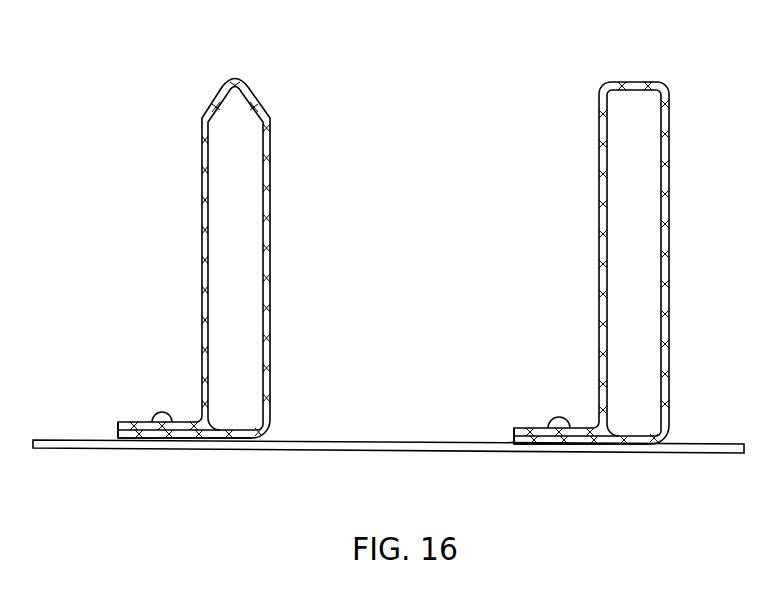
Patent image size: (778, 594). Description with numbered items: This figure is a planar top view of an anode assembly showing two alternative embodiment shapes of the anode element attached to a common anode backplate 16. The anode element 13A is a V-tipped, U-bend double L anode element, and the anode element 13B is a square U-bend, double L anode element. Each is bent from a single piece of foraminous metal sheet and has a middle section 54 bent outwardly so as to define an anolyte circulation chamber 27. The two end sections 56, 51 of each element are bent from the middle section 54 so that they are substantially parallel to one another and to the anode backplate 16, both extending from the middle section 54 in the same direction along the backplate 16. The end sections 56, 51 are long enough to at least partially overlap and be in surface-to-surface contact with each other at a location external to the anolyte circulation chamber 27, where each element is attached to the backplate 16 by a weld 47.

The V-tipped, U-bend double L anode element 13A is at (198, 264).
The square U-bend, double L anode element 13B is at (632, 282).
The anode backplate 16 is at (372, 451).
The anolyte circulation chamber 27 is at (233, 275).
The weld 47 is at (160, 413).
The end section 51 is at (130, 423).
The middle section 54 is at (202, 192).
The end section 56 is at (146, 434).